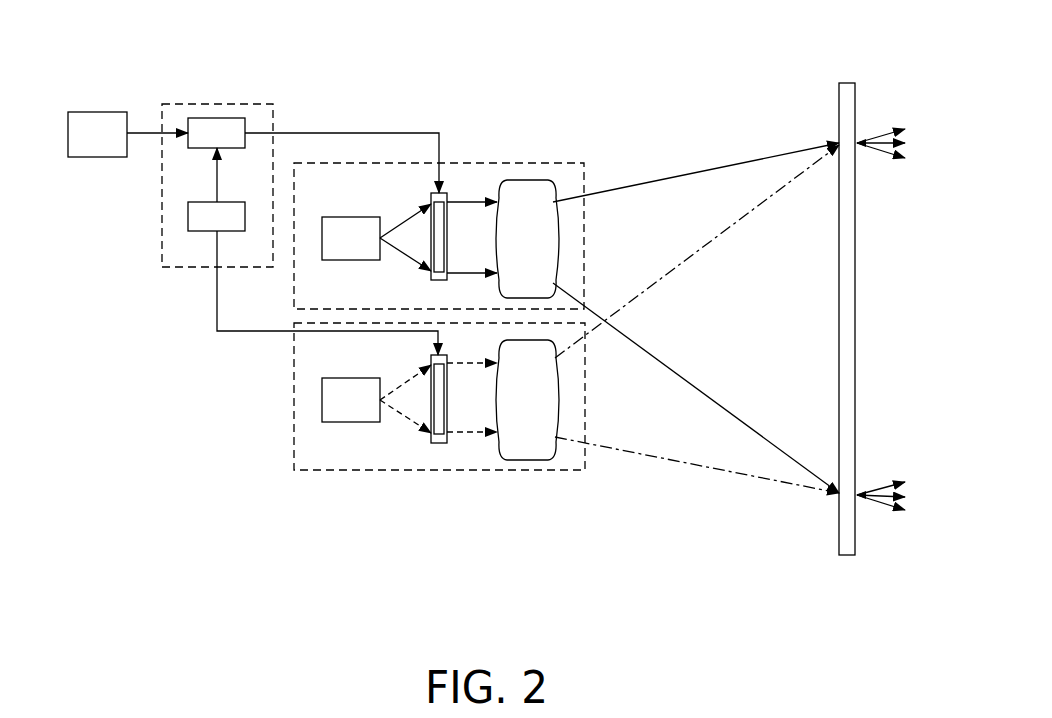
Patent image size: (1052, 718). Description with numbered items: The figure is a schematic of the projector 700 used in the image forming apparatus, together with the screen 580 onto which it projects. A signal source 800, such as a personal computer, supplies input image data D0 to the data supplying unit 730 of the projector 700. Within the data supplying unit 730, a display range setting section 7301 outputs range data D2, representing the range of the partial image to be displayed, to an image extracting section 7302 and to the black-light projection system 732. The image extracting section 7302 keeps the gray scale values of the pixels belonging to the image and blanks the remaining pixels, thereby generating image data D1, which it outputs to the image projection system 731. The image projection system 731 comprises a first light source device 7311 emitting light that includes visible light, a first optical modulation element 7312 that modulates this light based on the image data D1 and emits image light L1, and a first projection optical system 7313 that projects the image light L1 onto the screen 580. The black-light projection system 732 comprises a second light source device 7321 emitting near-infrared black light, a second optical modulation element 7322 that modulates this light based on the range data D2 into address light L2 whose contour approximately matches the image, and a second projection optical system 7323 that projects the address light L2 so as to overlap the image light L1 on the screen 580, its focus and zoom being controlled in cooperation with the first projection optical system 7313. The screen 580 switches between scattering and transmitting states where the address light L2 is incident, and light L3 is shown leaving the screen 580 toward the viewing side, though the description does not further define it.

The signal source 800 is at (100, 112).
The projector 700 is at (545, 80).
The data supplying unit 730 is at (247, 102).
The display range setting section 7301 is at (188, 212).
The image extracting section 7302 is at (206, 118).
The image projection system 731 is at (462, 163).
The first light source device 7311 is at (345, 217).
The first optical modulation element 7312 is at (437, 281).
The first projection optical system 7313 is at (527, 192).
The black-light projection system 732 is at (383, 471).
The second light source device 7321 is at (340, 423).
The second optical modulation element 7322 is at (442, 444).
The second projection optical system 7323 is at (527, 447).
The screen 580 is at (847, 83).
The input image data D0 is at (144, 133).
The image data D1 is at (325, 133).
The range data D2 is at (217, 174).
The image light L1 is at (652, 181).
The address light L2 is at (690, 465).
The reflected light L3 is at (878, 154).